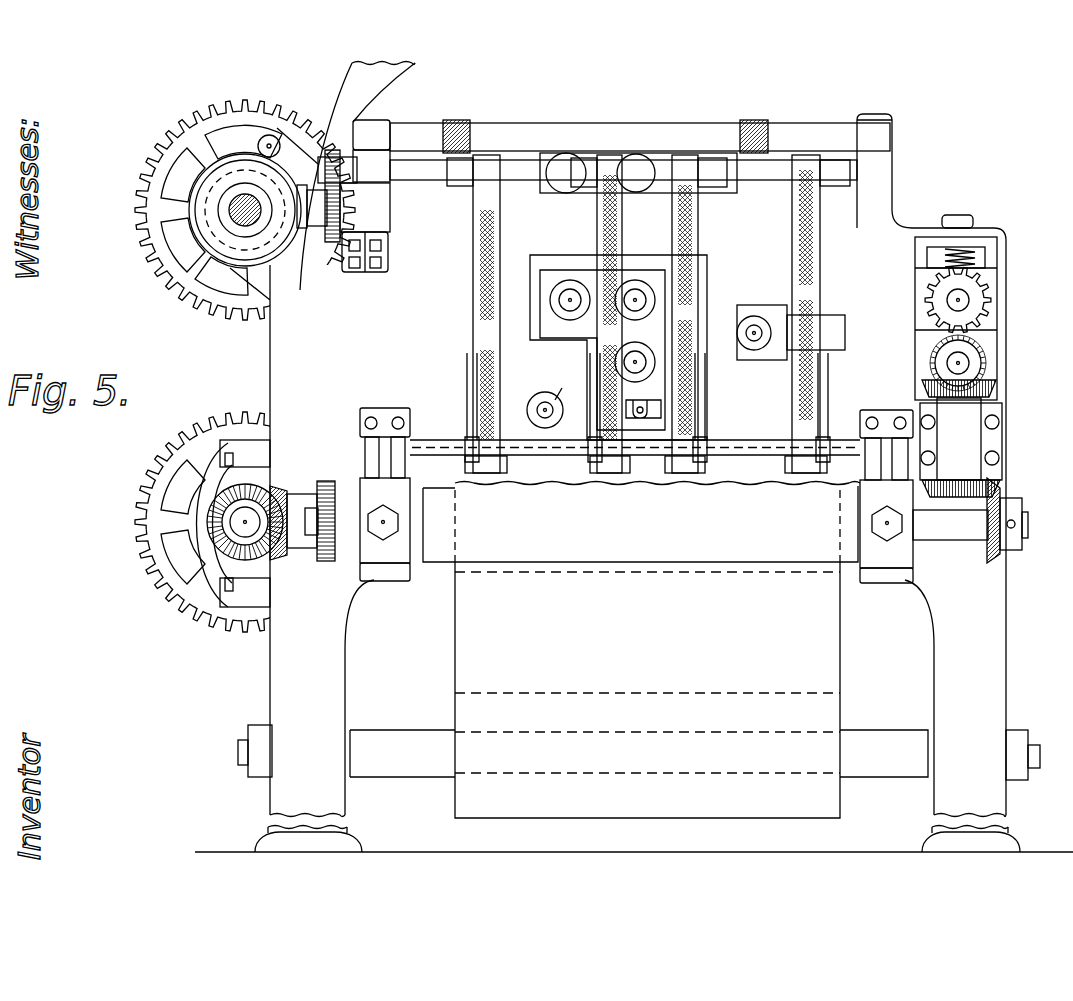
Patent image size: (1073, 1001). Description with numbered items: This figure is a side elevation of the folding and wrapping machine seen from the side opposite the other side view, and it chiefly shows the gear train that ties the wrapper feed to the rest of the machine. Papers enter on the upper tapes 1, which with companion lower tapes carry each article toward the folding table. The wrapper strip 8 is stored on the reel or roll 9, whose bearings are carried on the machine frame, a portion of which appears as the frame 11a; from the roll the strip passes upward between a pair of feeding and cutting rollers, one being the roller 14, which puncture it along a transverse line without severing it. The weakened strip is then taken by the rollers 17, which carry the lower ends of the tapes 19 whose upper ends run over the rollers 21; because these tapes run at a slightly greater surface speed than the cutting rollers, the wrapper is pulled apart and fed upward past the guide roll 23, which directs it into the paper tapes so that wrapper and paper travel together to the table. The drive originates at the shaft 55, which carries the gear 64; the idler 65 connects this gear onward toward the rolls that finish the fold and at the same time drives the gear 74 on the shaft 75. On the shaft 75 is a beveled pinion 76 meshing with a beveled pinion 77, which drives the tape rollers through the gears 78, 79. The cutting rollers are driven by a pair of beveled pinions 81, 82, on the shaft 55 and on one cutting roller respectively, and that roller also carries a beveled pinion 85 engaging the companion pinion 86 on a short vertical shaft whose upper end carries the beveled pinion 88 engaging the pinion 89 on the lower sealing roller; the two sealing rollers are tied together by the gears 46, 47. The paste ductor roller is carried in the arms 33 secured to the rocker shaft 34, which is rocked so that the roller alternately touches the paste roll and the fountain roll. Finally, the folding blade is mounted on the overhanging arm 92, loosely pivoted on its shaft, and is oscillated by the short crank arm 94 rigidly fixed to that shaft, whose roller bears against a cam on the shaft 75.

The upper tape 1 is at (460, 185).
The wrapper strip 8 is at (820, 672).
The reel 9 is at (238, 752).
The frame legs 11a is at (325, 690).
The feeding and cutting roller 14 is at (645, 545).
The roller 17 is at (425, 462).
The tape 19 is at (492, 248).
The roller 21 is at (548, 178).
The guide roll 23 is at (527, 135).
The arm 33 is at (660, 410).
The rocker shaft 34 is at (617, 347).
The gear 46 is at (924, 300).
The gear 47 is at (930, 364).
The shaft 55 is at (243, 523).
The gear 64 is at (165, 498).
The idler 65 is at (268, 380).
The gear 74 is at (180, 278).
The shaft 75 is at (240, 210).
The beveled pinion 76 is at (238, 245).
The beveled pinion 77 is at (305, 235).
The gear 78 is at (355, 240).
The gear 79 is at (333, 148).
The beveled pinion 81 is at (245, 540).
The beveled pinion 82 is at (273, 505).
The beveled pinion 85 is at (1002, 497).
The pinion 86 is at (992, 480).
The beveled pinion 88 is at (920, 392).
The pinion 89 is at (935, 380).
The overhanging arm 92 is at (375, 85).
The crank arm 94 is at (330, 562).